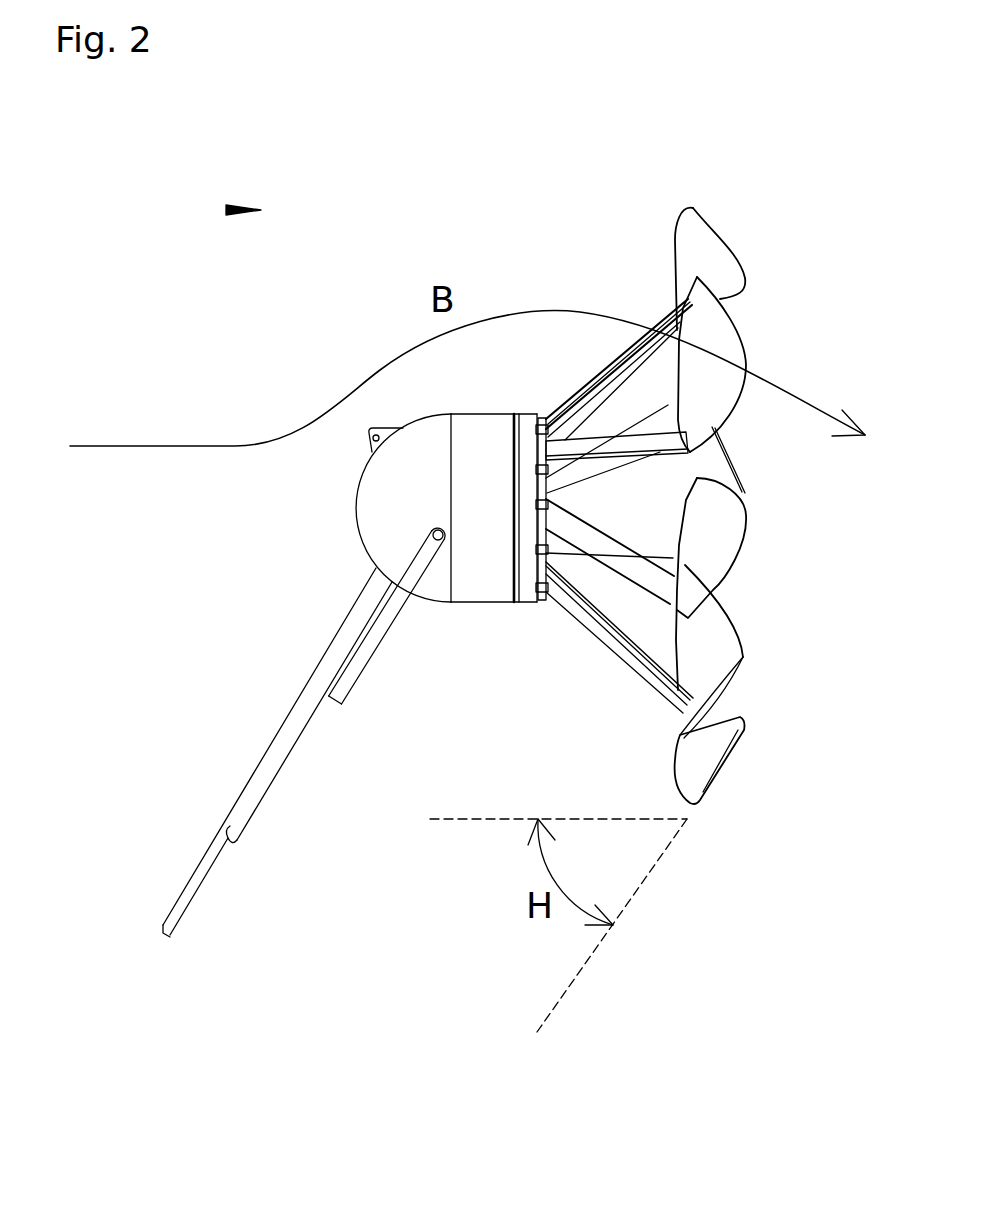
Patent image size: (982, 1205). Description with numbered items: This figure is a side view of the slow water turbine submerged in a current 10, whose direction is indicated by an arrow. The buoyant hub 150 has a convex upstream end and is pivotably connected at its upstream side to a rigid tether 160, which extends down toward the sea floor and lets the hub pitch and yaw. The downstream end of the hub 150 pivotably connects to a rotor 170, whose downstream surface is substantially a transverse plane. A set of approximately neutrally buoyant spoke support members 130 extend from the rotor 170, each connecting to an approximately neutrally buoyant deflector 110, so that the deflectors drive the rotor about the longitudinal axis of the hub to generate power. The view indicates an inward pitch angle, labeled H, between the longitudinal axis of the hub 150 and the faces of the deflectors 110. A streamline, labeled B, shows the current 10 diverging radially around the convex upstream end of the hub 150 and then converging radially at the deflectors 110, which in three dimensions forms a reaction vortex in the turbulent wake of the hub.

The current 10 is at (228, 210).
The deflector 110 is at (747, 788).
The spoke support member 130 is at (631, 712).
The buoyant hub 150 is at (322, 514).
The rigid tether 160 is at (254, 709).
The rotor 170 is at (525, 633).